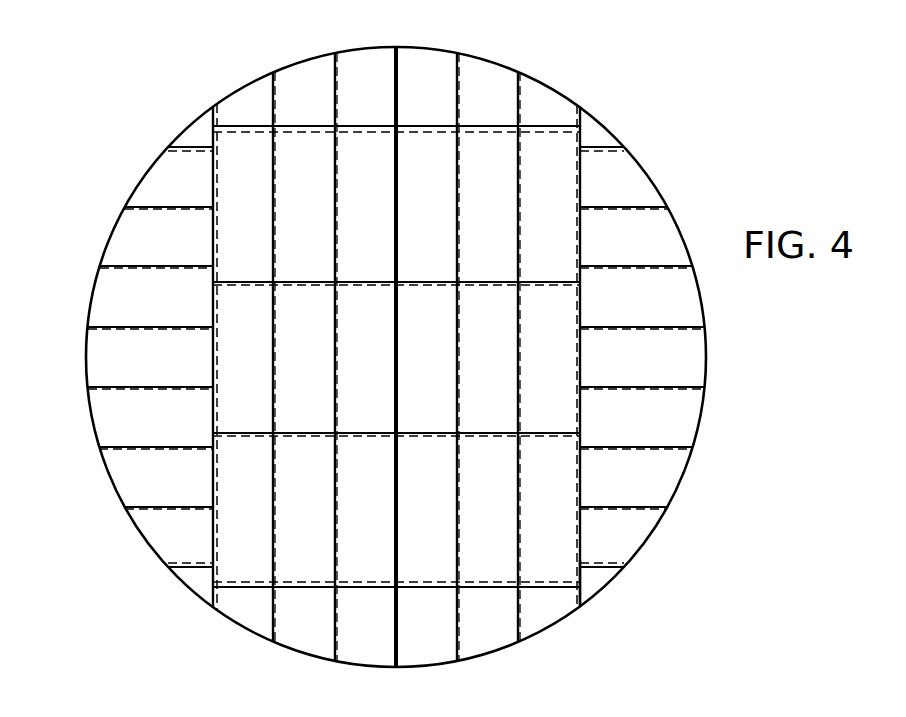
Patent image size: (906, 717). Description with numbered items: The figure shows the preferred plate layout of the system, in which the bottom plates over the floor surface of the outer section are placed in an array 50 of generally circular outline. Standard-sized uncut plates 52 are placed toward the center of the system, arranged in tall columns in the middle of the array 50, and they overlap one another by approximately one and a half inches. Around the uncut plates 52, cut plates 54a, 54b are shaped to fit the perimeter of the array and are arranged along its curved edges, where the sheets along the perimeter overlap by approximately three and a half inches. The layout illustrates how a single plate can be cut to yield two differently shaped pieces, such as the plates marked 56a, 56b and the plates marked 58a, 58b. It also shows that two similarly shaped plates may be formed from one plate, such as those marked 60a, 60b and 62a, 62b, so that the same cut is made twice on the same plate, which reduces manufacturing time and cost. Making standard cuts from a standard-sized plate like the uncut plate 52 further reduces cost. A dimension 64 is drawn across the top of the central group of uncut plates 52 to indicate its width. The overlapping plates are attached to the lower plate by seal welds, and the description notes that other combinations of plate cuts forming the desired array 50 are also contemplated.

The array 50 is at (571, 92).
The uncut plates 52 is at (385, 229).
The cut plate 54a is at (702, 352).
The cut plate 54b is at (688, 421).
The plate 56a is at (113, 460).
The plate 56b is at (220, 604).
The plate 58a is at (611, 571).
The plate 58b is at (354, 645).
The plate 60a is at (282, 630).
The plate 60b is at (495, 636).
The plate 62a is at (645, 522).
The plate 62b is at (641, 183).
The width of central die region 64 is at (575, 33).